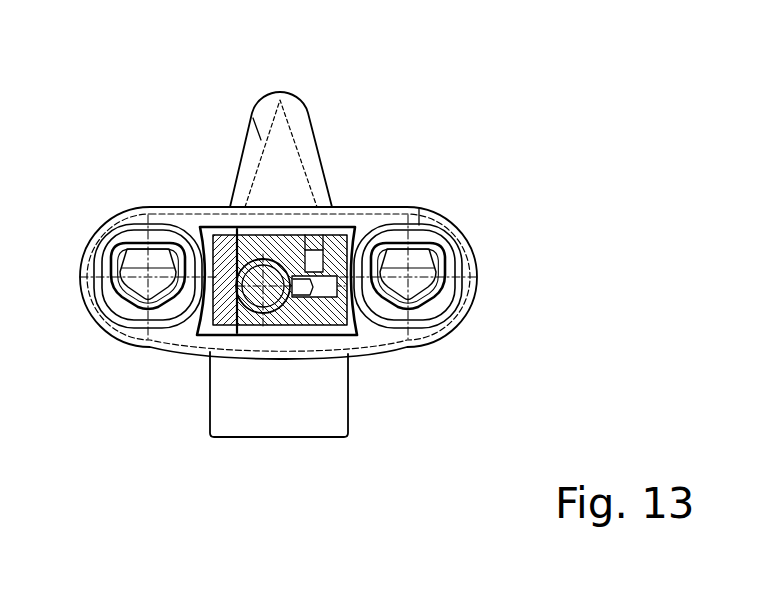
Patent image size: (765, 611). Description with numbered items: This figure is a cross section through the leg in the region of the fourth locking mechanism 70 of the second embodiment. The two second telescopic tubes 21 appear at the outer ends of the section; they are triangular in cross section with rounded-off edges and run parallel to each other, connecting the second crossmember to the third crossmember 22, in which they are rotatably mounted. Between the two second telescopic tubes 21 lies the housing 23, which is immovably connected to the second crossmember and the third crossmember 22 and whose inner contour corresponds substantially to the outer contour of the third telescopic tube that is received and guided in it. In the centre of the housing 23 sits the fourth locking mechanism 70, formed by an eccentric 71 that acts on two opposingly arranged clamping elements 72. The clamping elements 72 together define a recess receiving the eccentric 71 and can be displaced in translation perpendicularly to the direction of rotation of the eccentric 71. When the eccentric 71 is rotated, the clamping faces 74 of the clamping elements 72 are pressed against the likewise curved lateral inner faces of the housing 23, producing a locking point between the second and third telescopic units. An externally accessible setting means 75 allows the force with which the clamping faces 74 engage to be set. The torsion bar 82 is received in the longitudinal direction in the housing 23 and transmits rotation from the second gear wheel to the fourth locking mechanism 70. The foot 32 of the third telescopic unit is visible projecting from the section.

The second telescopic tubes 21 is at (455, 245).
The third crossmember 22 is at (423, 207).
The housing 23 is at (348, 233).
The foot 32 is at (252, 113).
The fourth locking mechanism 70 is at (187, 356).
The eccentric 71 is at (266, 318).
The clamping elements 72 is at (338, 332).
The clamping faces 74 is at (200, 227).
The setting means 75 is at (318, 232).
The torsion bar 82 is at (257, 228).